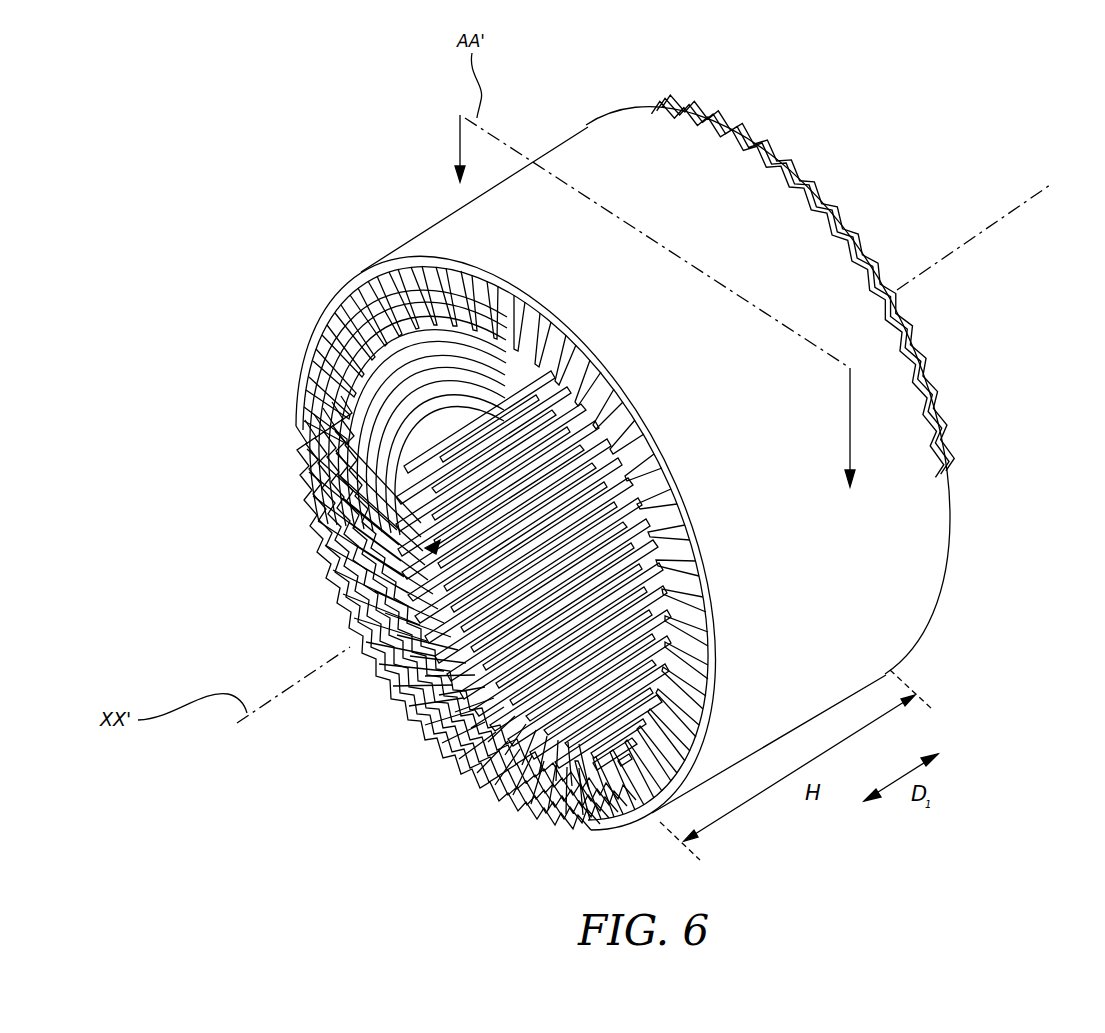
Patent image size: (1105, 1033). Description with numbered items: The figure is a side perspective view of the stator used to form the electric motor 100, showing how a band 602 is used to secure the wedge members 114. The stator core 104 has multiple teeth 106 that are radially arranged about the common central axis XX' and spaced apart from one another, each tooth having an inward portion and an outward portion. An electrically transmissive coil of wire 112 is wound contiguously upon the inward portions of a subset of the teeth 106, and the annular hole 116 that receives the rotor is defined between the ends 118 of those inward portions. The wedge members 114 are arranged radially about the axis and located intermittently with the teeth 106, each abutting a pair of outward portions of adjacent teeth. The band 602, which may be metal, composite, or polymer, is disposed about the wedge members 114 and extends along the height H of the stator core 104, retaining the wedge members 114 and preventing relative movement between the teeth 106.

The electric motor 100 is at (907, 116).
The band 602 is at (886, 562).
The stator core 104 is at (342, 374).
The teeth 106 is at (328, 326).
The electrically transmissive coil of wire 112 is at (418, 740).
The wedge members 114 is at (394, 272).
The annular hole 116 is at (342, 597).
The ends 118 is at (345, 537).